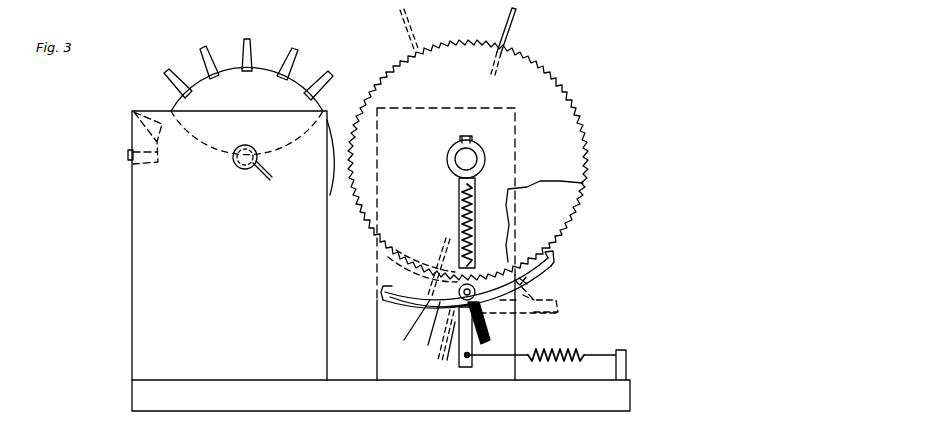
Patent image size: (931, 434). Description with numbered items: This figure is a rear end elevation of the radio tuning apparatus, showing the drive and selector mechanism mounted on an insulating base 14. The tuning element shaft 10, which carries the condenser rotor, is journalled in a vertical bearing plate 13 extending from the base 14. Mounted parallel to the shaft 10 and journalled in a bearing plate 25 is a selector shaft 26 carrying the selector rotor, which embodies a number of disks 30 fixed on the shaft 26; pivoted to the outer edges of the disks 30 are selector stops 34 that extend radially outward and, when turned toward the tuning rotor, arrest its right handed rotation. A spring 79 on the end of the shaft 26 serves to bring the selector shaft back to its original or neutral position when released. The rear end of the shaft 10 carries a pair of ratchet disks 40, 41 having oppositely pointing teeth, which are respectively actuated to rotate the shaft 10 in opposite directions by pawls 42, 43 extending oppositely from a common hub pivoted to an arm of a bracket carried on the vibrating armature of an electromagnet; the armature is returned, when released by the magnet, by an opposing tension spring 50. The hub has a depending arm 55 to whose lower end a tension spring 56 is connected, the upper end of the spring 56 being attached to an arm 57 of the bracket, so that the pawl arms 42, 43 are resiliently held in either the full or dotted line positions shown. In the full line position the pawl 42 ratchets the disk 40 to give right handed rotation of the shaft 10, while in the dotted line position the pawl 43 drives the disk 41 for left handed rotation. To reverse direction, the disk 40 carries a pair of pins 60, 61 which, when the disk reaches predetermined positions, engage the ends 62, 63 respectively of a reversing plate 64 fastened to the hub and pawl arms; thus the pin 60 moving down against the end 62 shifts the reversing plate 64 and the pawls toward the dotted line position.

The insulating base 14 is at (356, 398).
The bearing plate 25 is at (132, 298).
The disks 30 is at (227, 69).
The selector stops 34 is at (282, 58).
The selector shaft 26 is at (236, 159).
The spring 79 is at (253, 147).
The ratchet disk 41 is at (563, 102).
The ratchet disk 40 is at (566, 218).
The shaft 10 is at (470, 156).
The arm 57 is at (458, 197).
The tension spring 56 is at (477, 262).
The pawl 42 is at (554, 262).
The pawl 43 is at (390, 301).
The end of reversing plate 62 is at (528, 285).
The pin 60 is at (503, 32).
The pin 61 is at (418, 28).
The end of reversing plate 63 is at (429, 332).
The reversing plate 64 is at (445, 343).
The depending arm 55 is at (488, 334).
The bearing plate 13 is at (517, 342).
The tension spring 50 is at (558, 350).